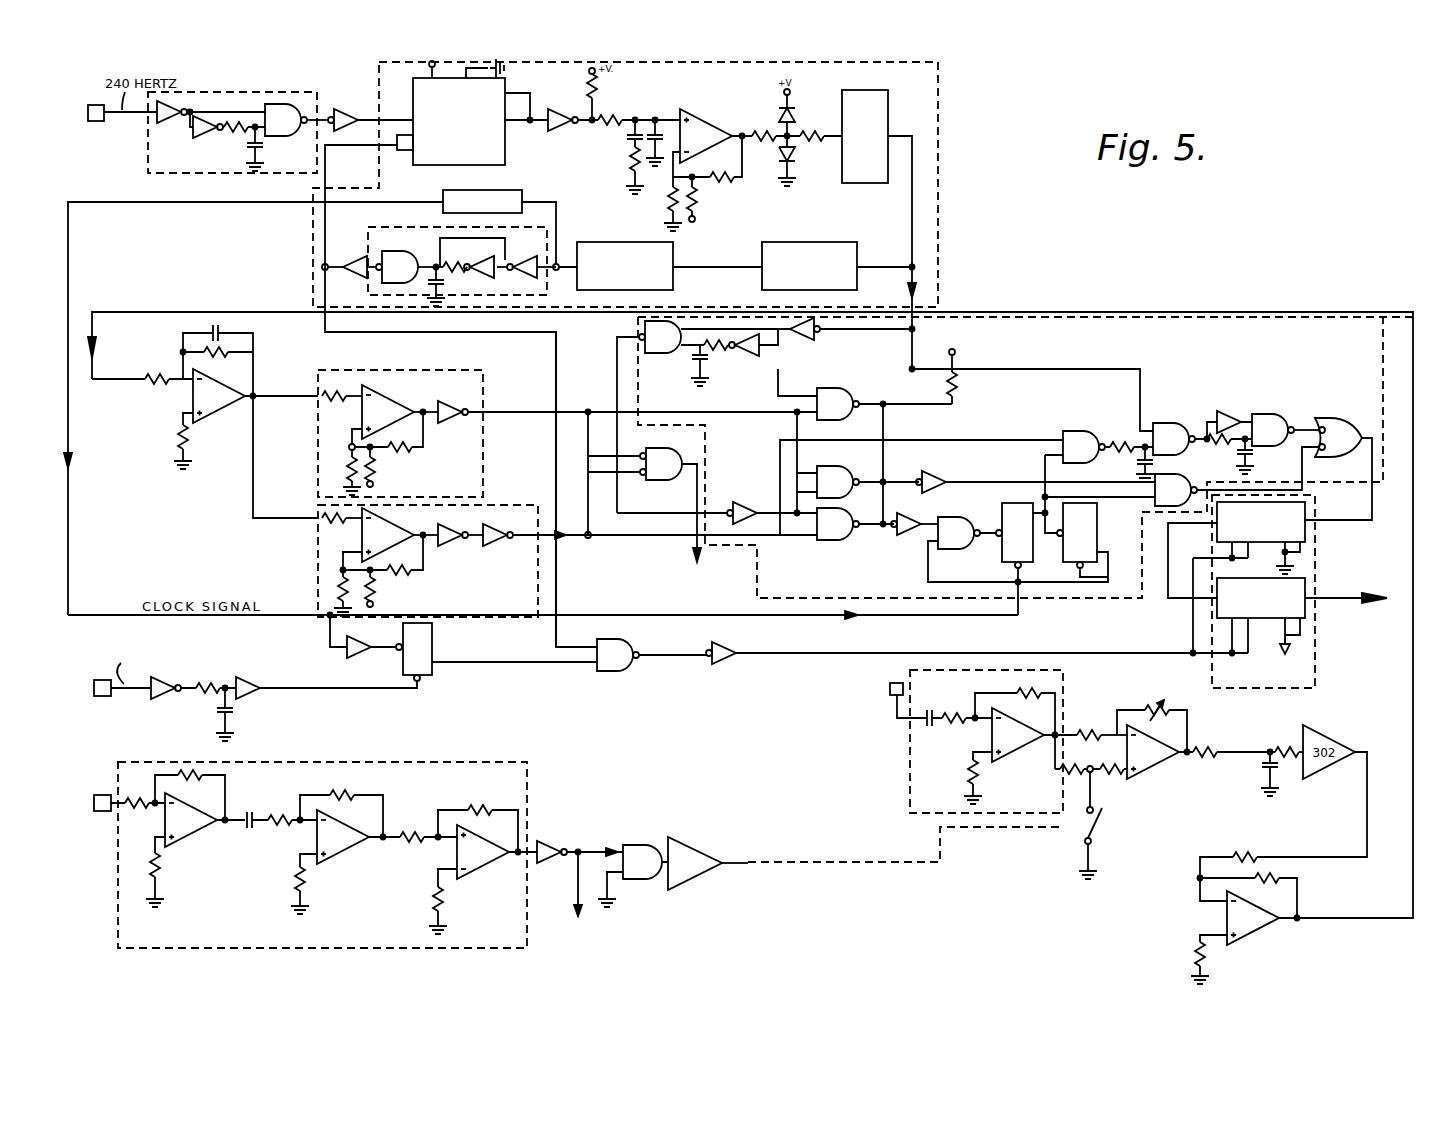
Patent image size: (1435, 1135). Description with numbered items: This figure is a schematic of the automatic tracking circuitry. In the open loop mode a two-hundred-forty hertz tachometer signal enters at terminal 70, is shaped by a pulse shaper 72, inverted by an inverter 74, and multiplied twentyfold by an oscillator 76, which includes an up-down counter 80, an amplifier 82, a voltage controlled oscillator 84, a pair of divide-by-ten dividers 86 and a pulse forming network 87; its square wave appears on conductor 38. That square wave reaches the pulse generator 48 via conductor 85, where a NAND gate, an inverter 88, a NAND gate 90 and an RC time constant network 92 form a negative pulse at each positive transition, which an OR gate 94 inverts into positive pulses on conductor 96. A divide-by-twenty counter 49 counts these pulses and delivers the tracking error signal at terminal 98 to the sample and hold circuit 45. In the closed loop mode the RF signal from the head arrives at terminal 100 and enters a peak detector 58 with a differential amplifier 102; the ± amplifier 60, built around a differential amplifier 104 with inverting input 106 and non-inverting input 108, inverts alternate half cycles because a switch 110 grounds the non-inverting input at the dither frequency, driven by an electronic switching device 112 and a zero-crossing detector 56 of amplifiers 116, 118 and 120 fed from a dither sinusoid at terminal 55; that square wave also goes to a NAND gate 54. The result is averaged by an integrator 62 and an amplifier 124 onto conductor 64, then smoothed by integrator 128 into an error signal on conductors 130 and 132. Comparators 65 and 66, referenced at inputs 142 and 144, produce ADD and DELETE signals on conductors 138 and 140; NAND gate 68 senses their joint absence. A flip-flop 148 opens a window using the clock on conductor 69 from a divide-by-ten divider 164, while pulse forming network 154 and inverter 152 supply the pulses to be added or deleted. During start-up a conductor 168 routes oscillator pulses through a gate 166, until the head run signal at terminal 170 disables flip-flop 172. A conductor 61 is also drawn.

The terminal 70 is at (96, 121).
The pulse shaper 72 is at (314, 92).
The inverter 74 is at (348, 109).
The up-down counter 80 is at (505, 140).
The amplifier 82 is at (728, 118).
The voltage controlled oscillator 84 is at (880, 90).
The oscillator 76 is at (945, 152).
The conductor 38 is at (918, 286).
The divide-by-10 divider 164 is at (519, 191).
The divide-by-10 dividers 86 is at (762, 252).
The pulse forming network 87 is at (372, 227).
The integrator 128 is at (232, 409).
The conductor 130 is at (292, 394).
The conductor 132 is at (300, 518).
The comparator 65 is at (394, 417).
The input 142 is at (356, 429).
The output conductor 138 is at (519, 412).
The comparator 66 is at (401, 542).
The input 144 is at (358, 551).
The output conductor 140 is at (571, 532).
The conductor 168 is at (558, 555).
The pulse forming network 154 is at (718, 348).
The NAND gate 68 is at (675, 481).
The inverter 152 is at (750, 505).
The pulse generator 48 is at (1000, 453).
The conductor 85 is at (1078, 369).
The inverter 88 is at (1226, 411).
The NAND gate 90 is at (1280, 414).
The RC time constant network 92 is at (1233, 442).
The OR gate 94 is at (1352, 418).
The conductor 96 is at (1373, 510).
The terminal 98 is at (1365, 598).
The divide-by-20 counter 49 is at (1315, 556).
The flip-flop 148 is at (1084, 571).
The conductor 69 is at (930, 617).
The sample and hold circuit 45 is at (1352, 646).
The flip-flop 172 is at (433, 628).
The terminal 170 is at (102, 696).
The gate 166 is at (627, 672).
The zero-crossing detector 56 is at (305, 837).
The terminal 55 is at (103, 811).
The amplifier 116 is at (205, 832).
The amplifier 118 is at (352, 848).
The amplifier 120 is at (480, 870).
The NAND gate 54 is at (580, 899).
The electronic switching device 112 is at (666, 838).
The peak detector 58 is at (953, 741).
The terminal 100 is at (889, 690).
The differential amplifier 102 is at (988, 742).
The ± amplifier 60 is at (1137, 772).
The differential amplifier 104 is at (1165, 760).
The inverting input 106 is at (1117, 710).
The non-inverting input 108 is at (1091, 785).
The switch 110 is at (1104, 815).
The line 61 is at (1230, 748).
The integrator 62 is at (1282, 741).
The amplifier 124 is at (1262, 928).
The conductor 64 is at (1413, 886).